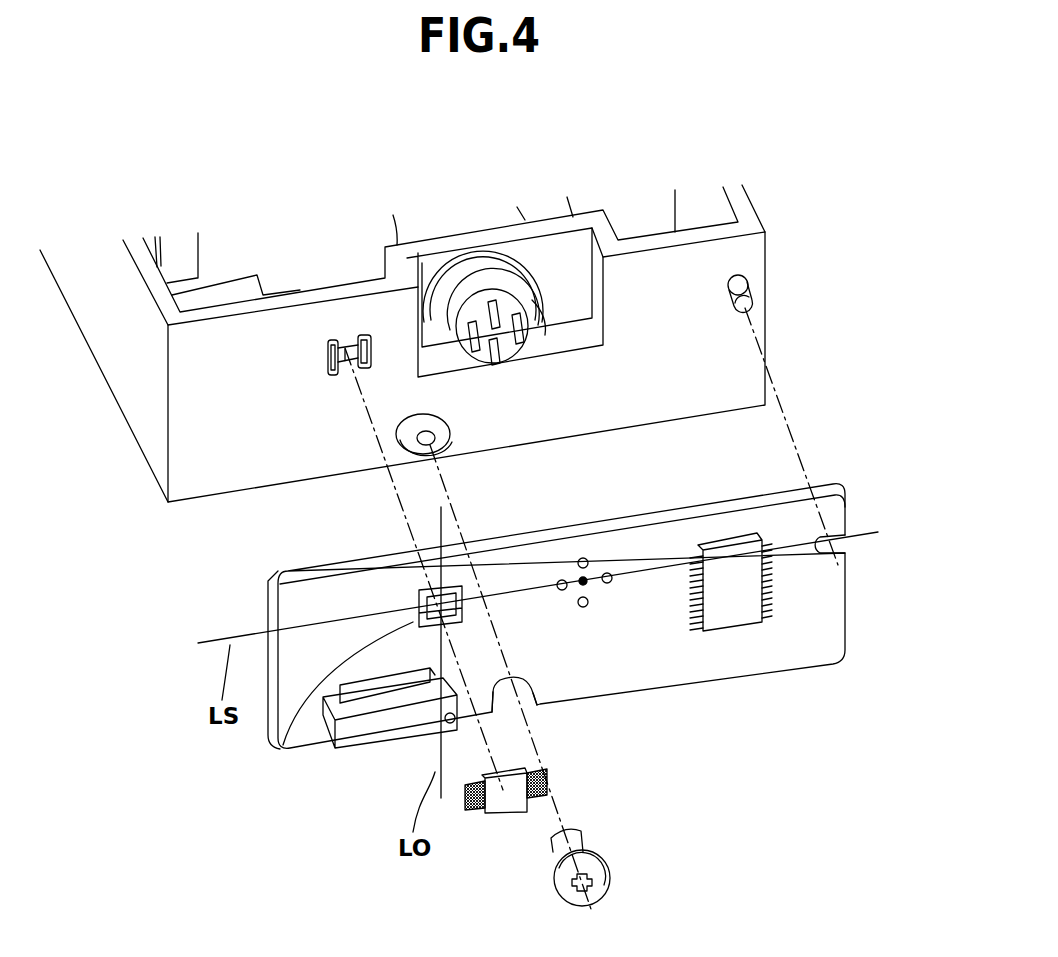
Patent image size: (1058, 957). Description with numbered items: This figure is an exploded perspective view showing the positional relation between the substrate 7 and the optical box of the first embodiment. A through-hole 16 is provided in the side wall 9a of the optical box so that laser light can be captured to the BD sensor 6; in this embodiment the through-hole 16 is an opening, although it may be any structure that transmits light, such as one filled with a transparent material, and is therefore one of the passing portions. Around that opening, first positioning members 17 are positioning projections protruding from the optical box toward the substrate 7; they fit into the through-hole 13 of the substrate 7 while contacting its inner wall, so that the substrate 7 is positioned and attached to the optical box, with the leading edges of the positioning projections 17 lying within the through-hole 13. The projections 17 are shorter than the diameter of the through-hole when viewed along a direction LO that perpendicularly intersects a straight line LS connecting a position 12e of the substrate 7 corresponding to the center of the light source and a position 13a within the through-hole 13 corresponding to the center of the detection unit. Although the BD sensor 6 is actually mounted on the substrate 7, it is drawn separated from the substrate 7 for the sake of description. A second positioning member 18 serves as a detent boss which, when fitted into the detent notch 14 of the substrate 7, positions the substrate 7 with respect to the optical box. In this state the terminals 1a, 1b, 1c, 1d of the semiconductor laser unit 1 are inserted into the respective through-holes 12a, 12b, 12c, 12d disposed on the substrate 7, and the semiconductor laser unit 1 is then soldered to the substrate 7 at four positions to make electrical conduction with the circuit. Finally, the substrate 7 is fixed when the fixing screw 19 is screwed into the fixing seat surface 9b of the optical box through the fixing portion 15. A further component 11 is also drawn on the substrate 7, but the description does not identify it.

The semiconductor laser unit 1 is at (478, 280).
The terminal 1a is at (500, 307).
The terminal 1b is at (463, 350).
The terminal 1c is at (507, 350).
The terminal 1d is at (540, 305).
The BD sensor 6 is at (508, 796).
The substrate 7 is at (830, 625).
The side wall 9a is at (207, 462).
The fixing seat surface 9b is at (412, 445).
The board connector 11 is at (370, 733).
The through-hole 12a is at (587, 562).
The through-hole 12b is at (562, 590).
The through-hole 12c is at (584, 607).
The through-hole 12d is at (609, 583).
The position corresponding to the center of the light source 12e is at (583, 580).
The through-hole 13 is at (450, 592).
The position corresponding to the center of the detection unit 13a is at (283, 745).
The detent notch 14 is at (847, 545).
The fixing portion 15 is at (522, 688).
The through-hole 16 is at (330, 360).
The first positioning members 17 is at (365, 335).
The second positioning member 18 is at (746, 288).
The screw 19 is at (607, 868).